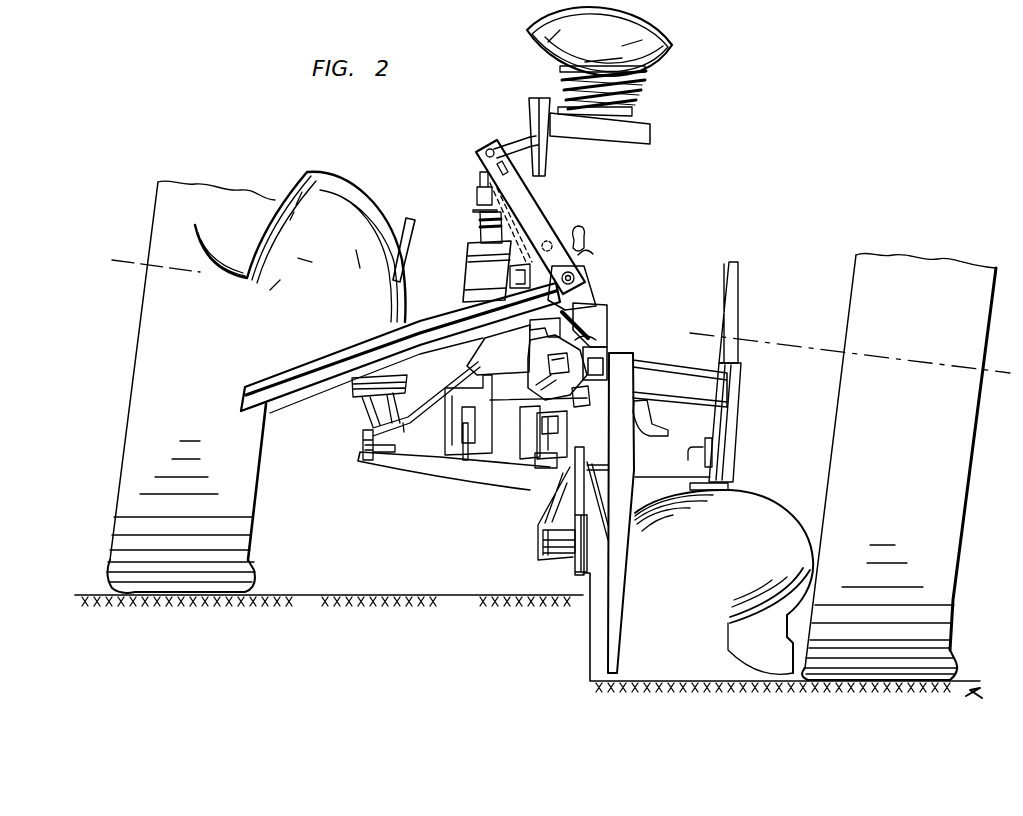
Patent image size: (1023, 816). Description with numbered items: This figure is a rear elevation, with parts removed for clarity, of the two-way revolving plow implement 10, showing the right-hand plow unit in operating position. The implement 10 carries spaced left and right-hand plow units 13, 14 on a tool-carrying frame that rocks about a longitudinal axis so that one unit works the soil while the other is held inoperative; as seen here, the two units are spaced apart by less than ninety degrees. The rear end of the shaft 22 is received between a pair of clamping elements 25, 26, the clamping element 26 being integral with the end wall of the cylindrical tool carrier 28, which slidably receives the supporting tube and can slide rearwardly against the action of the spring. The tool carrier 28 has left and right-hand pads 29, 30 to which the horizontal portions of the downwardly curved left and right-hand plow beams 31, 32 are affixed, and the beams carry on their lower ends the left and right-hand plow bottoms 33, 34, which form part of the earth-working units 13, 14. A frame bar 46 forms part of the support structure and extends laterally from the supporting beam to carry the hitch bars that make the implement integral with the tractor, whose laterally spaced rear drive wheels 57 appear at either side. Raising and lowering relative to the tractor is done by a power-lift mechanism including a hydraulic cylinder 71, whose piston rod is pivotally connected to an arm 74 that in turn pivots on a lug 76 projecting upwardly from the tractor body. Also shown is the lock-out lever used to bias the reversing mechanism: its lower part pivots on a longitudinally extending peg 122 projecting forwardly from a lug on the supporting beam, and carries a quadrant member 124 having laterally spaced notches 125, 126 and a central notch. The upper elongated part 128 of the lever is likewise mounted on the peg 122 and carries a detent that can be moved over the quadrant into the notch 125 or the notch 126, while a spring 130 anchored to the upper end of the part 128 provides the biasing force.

The implement 10 is at (636, 252).
The left-hand plow unit 13 is at (197, 385).
The right-hand plow unit 14 is at (947, 610).
The shaft 22 is at (527, 383).
The clamping element 25 is at (606, 333).
The clamping element 26 is at (555, 393).
The cylindrical tool carrier 28 is at (589, 394).
The left-hand pad 29 is at (527, 343).
The right-hand pad 30 is at (607, 347).
The left-hand plow beam 31 is at (430, 328).
The right-hand plow beam 32 is at (628, 462).
The plow bottom 33 is at (300, 180).
The plow bottom 34 is at (757, 503).
The frame bar 46 is at (667, 363).
The rear drive wheels 57 is at (120, 502).
The hydraulic cylinder 71 is at (466, 276).
The arm 74 is at (514, 145).
The lug 76 is at (550, 150).
The peg 122 is at (577, 275).
The quadrant member 124 is at (586, 251).
The notch 125 is at (534, 250).
The notch 126 is at (586, 234).
The upper elongated part 128 is at (530, 192).
The spring 130 is at (483, 209).